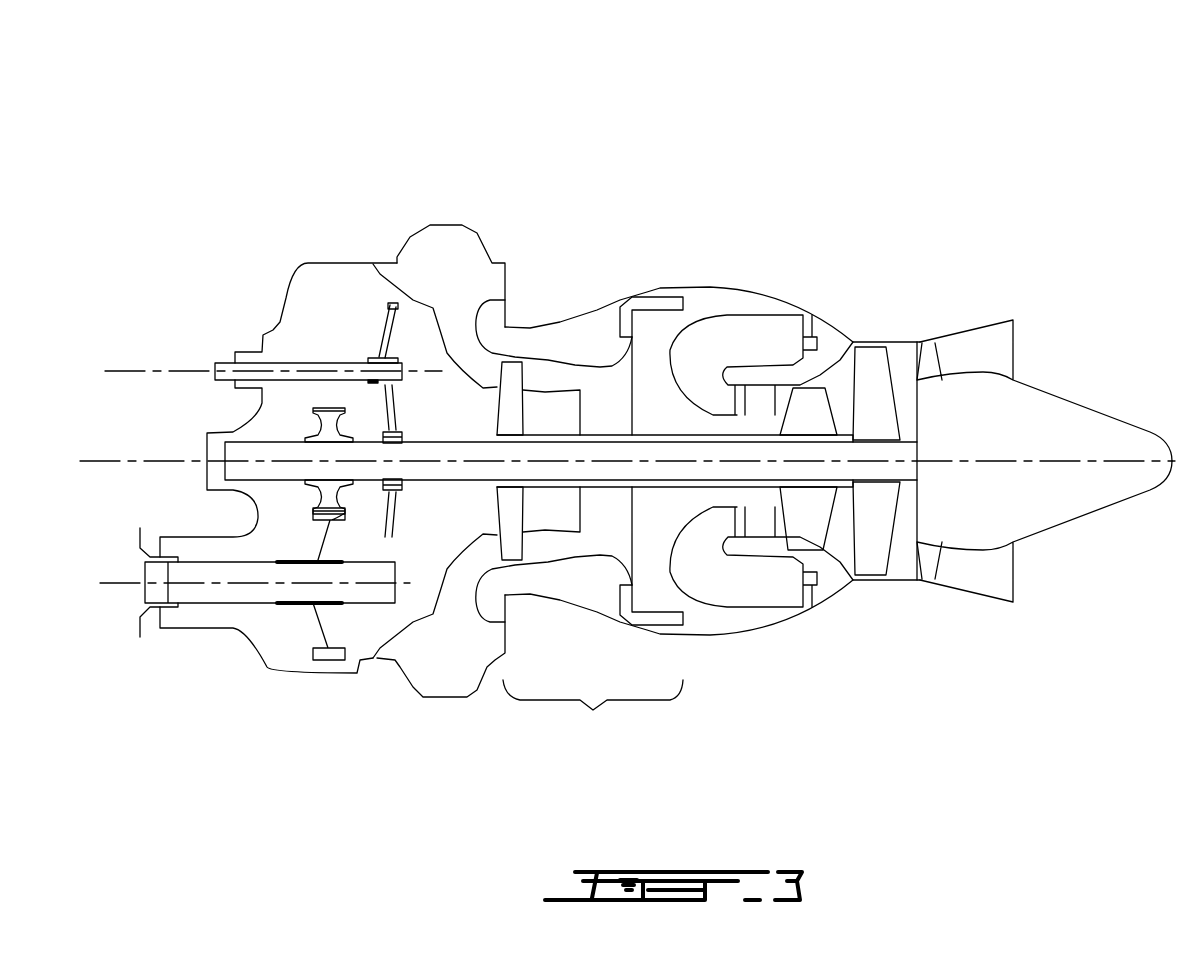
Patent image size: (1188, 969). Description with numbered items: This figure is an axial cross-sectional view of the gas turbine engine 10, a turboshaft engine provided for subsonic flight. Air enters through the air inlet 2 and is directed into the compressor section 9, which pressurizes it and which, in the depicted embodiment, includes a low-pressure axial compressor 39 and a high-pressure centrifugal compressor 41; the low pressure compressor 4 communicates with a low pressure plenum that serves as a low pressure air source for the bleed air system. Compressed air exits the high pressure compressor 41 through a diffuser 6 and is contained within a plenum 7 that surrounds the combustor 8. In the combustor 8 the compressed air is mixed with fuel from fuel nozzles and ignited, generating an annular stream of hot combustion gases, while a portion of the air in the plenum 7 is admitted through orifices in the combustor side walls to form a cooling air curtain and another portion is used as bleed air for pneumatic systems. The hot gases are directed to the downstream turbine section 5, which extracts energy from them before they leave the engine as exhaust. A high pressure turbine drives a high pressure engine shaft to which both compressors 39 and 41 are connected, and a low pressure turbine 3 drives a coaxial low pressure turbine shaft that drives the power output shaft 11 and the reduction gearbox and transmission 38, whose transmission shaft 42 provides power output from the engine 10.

The gas turbine engine 10 is at (886, 141).
The air inlet 2 is at (447, 699).
The low pressure turbine 3 is at (875, 557).
The low pressure compressor 4 is at (798, 520).
The turbine section 5 is at (840, 537).
The diffuser 6 is at (655, 302).
The plenum 7 is at (725, 622).
The combustor 8 is at (745, 318).
The compressor section 9 is at (579, 526).
The power output shaft 11 is at (432, 443).
The reduction gearbox and transmission 38 is at (328, 314).
The low-pressure axial compressor 39 is at (517, 360).
The high-pressure centrifugal compressor 41 is at (603, 410).
The transmission shaft 42 is at (200, 597).